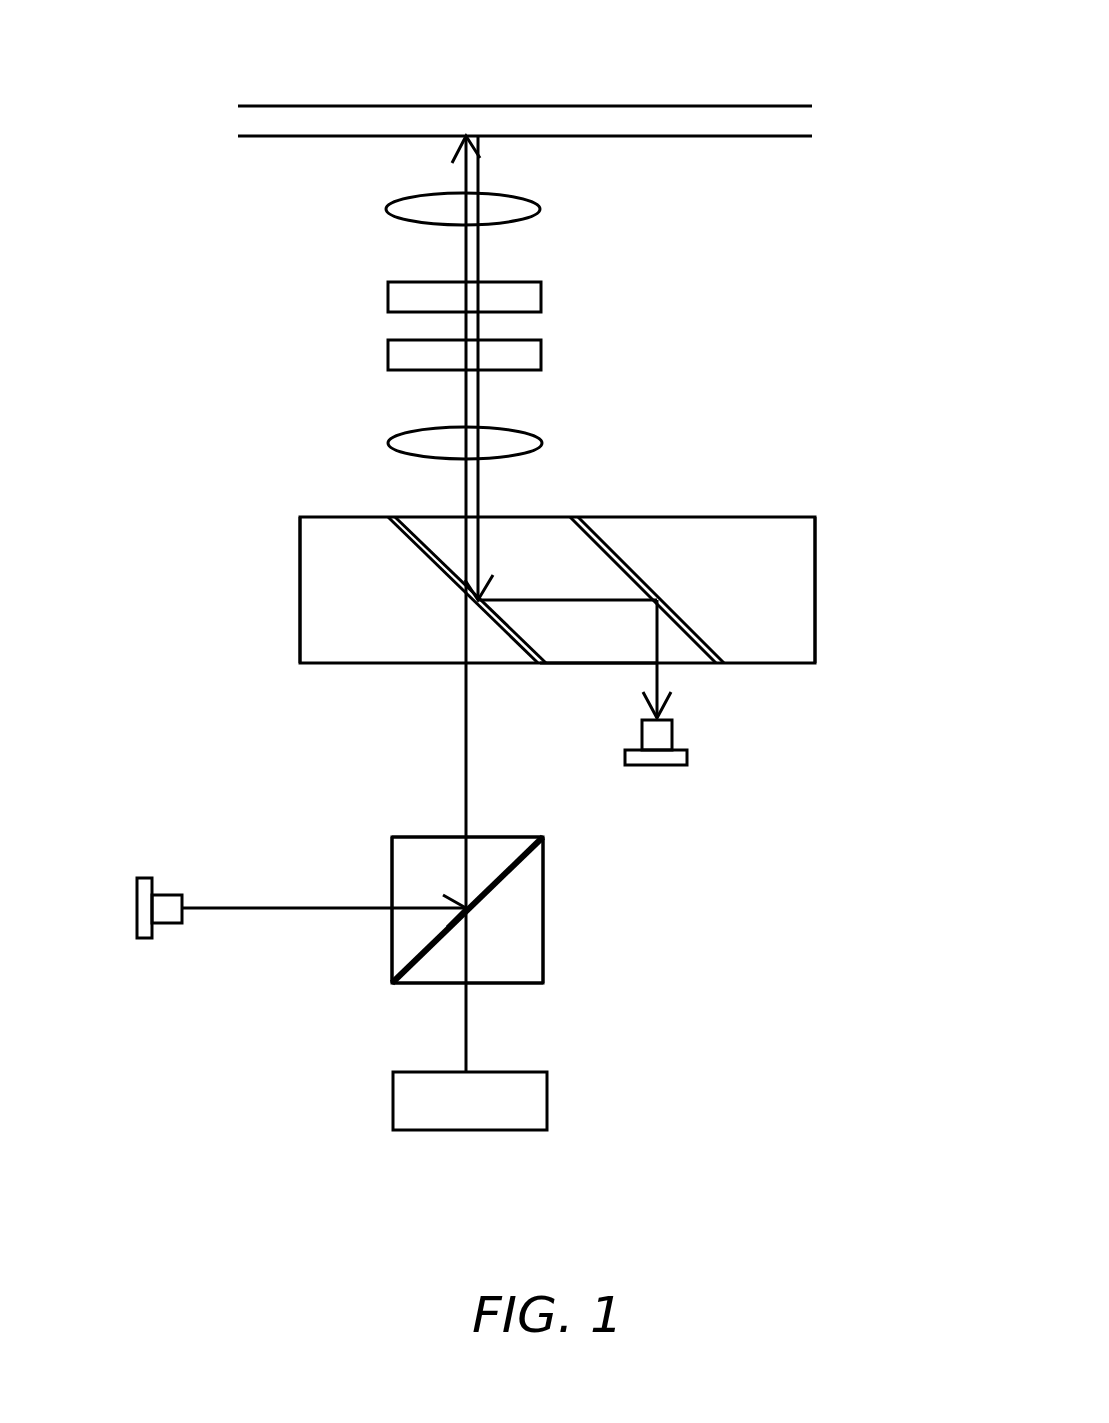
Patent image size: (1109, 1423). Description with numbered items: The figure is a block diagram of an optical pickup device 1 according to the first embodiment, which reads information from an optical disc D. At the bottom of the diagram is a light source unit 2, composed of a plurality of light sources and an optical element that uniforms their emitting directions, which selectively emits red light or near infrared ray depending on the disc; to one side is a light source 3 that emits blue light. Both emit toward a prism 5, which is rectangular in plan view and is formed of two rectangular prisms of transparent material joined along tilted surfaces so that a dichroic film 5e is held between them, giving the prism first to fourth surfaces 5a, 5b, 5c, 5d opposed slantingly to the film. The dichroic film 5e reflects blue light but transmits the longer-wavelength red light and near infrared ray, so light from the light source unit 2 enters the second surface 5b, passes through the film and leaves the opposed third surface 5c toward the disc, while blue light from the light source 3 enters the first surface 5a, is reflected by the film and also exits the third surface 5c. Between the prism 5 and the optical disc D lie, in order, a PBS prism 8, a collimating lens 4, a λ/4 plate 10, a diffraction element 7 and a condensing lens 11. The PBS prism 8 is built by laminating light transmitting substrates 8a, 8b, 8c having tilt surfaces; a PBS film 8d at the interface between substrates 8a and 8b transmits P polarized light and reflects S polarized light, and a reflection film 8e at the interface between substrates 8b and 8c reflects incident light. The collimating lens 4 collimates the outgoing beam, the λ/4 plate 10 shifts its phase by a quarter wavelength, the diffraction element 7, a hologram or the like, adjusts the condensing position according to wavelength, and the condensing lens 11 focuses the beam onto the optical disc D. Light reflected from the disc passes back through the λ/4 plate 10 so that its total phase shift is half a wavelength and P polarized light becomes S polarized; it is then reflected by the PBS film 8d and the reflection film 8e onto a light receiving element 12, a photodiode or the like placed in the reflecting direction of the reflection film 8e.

The optical pickup device 1 is at (840, 241).
The optical disc D is at (758, 122).
The light source unit 2 is at (500, 1130).
The light source 3 is at (130, 908).
The collimating lens 4 is at (530, 447).
The prism 5 is at (507, 903).
The first surface 5a is at (392, 940).
The second surface 5b is at (423, 984).
The third surface 5c is at (410, 836).
The fourth surface 5d is at (545, 929).
The dichroic film 5e is at (509, 874).
The diffraction element 7 is at (533, 301).
The PBS prism 8 is at (555, 600).
The light transmitting substrate 8a is at (313, 652).
The light transmitting substrate 8b is at (570, 652).
The light transmitting substrate 8c is at (780, 655).
The PBS film 8d is at (428, 557).
The reflection film 8e is at (640, 566).
The λ/4 plate 10 is at (533, 359).
The condensing lens 11 is at (535, 211).
The light receiving element 12 is at (672, 767).